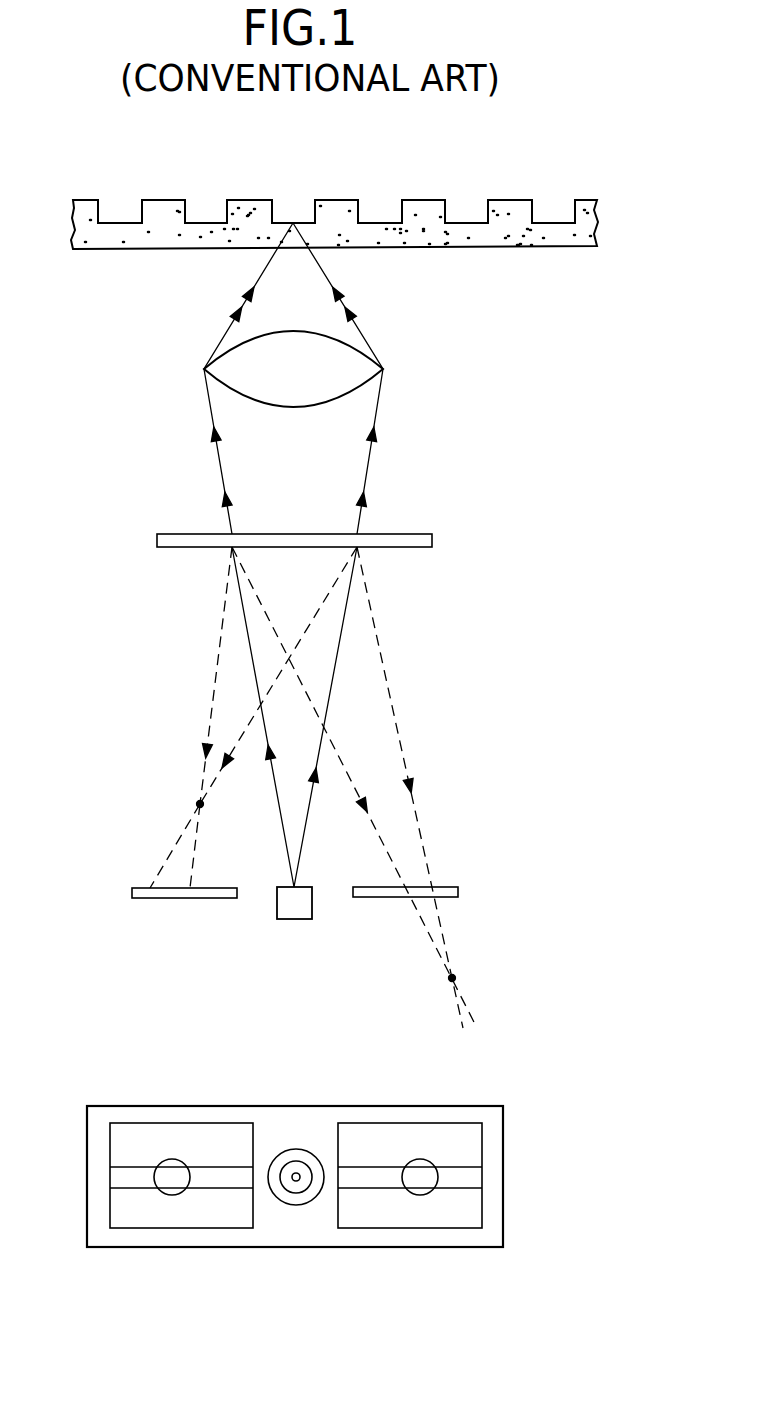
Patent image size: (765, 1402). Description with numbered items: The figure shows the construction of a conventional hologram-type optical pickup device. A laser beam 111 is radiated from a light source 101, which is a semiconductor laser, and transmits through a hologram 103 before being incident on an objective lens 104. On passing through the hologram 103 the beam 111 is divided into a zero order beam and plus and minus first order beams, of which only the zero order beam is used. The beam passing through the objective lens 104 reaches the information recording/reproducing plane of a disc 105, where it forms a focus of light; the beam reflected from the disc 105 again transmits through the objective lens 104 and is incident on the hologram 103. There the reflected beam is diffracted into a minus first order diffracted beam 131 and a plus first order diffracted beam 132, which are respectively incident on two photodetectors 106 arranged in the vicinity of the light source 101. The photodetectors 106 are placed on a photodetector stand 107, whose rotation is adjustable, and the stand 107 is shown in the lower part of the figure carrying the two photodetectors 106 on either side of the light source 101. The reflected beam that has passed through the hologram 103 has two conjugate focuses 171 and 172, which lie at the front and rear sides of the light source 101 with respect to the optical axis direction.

The light source 101 is at (292, 905).
The hologram 103 is at (403, 537).
The objective lens 104 is at (332, 365).
The disc 105 is at (497, 237).
The photodetectors 106 is at (142, 887).
The photodetector stand 107 is at (493, 1208).
The laser beam 111 is at (218, 455).
The −first order diffracted beam 131 is at (243, 737).
The +first order diffracted beam 132 is at (408, 765).
The conjugate focus 171 is at (193, 803).
The conjugate focus 172 is at (457, 973).